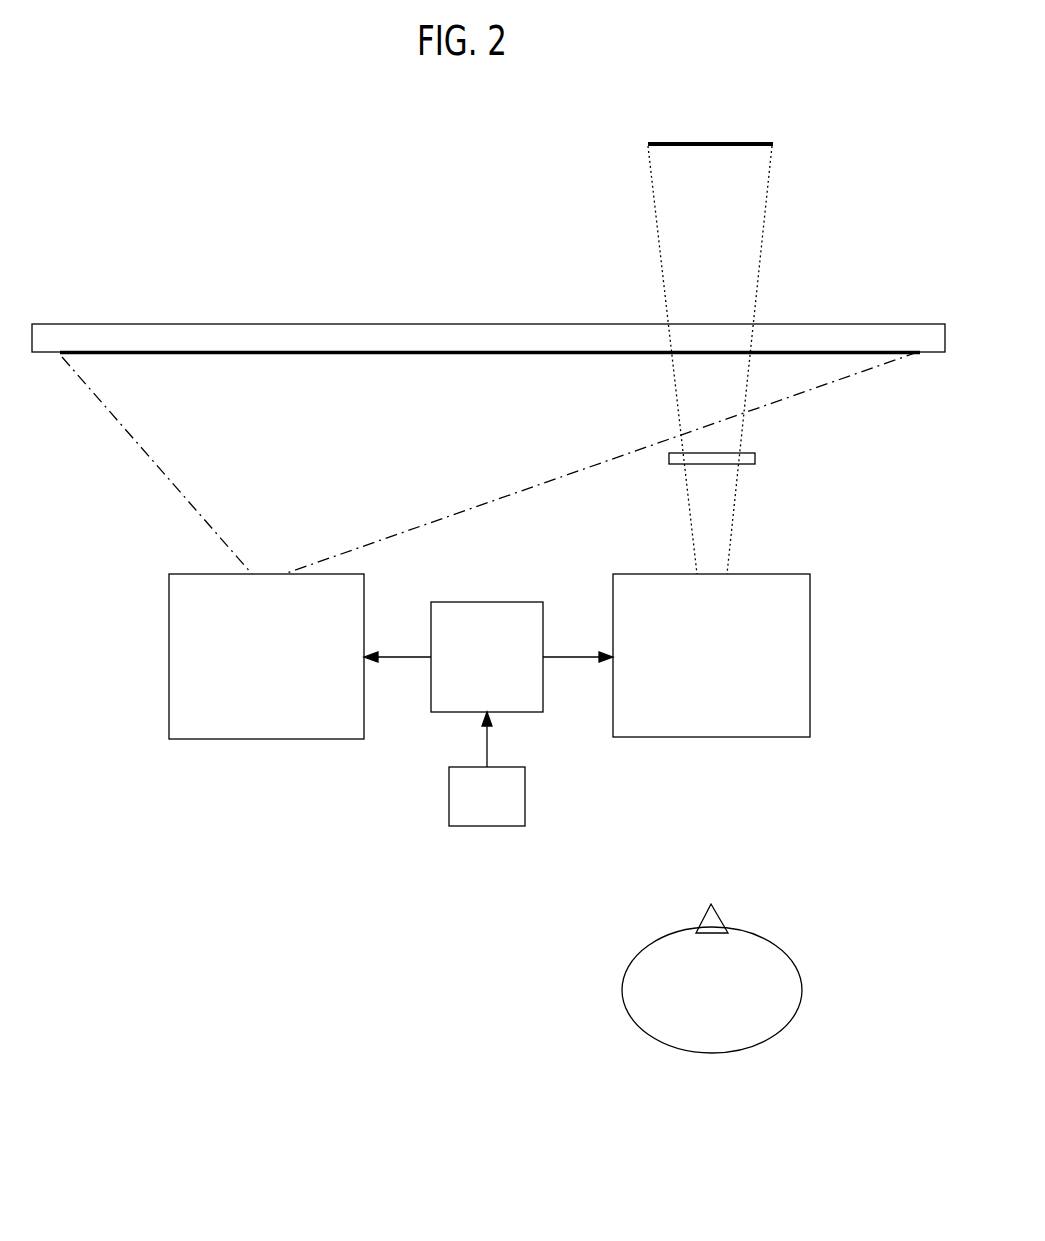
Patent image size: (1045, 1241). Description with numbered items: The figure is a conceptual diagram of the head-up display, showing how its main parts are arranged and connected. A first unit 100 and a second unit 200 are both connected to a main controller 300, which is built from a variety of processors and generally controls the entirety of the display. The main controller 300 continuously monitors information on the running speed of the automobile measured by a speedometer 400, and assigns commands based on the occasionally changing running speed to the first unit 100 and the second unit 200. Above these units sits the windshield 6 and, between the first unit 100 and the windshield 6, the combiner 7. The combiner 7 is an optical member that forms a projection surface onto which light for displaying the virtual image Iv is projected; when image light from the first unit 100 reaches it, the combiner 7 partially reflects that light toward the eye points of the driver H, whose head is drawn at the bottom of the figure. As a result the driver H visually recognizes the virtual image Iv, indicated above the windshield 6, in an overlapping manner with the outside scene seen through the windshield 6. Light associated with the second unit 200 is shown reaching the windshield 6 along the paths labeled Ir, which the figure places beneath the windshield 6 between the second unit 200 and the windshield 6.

The windshield 6 is at (180, 325).
The virtual image Iv is at (748, 143).
The real image Ir is at (424, 354).
The combiner 7 is at (755, 459).
The first unit 100 is at (640, 574).
The second unit 200 is at (185, 574).
The main controller 300 is at (488, 602).
The speedometer 400 is at (525, 797).
The driver H is at (802, 975).